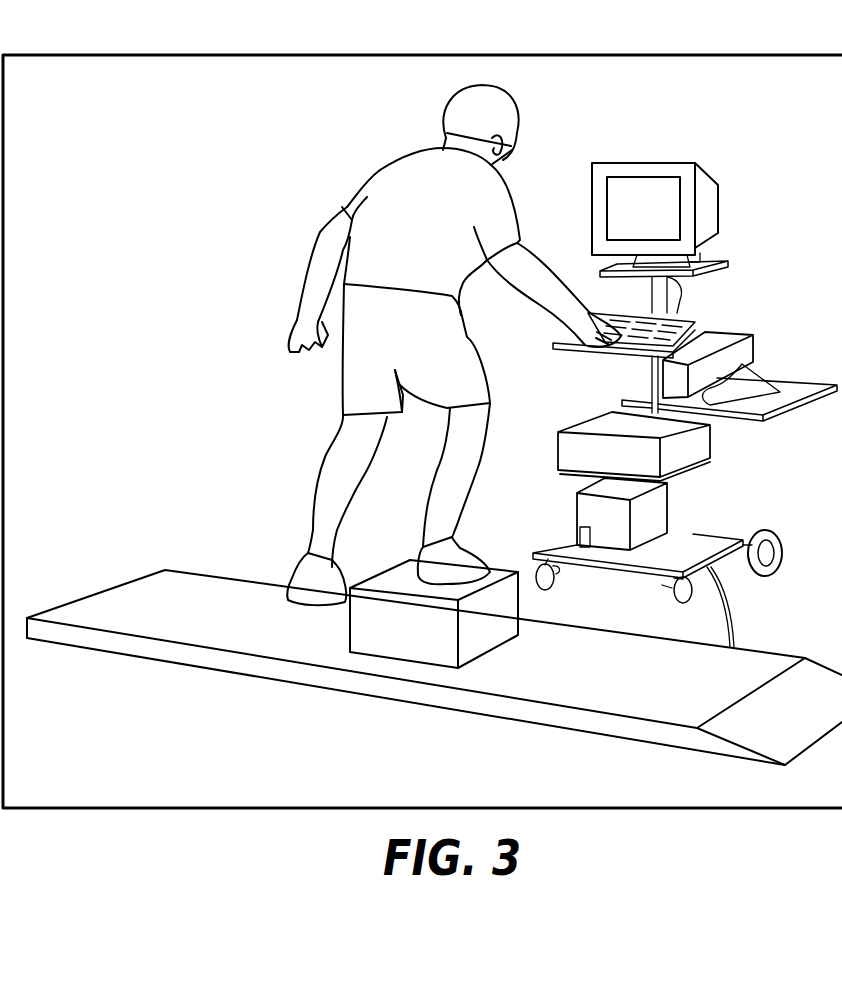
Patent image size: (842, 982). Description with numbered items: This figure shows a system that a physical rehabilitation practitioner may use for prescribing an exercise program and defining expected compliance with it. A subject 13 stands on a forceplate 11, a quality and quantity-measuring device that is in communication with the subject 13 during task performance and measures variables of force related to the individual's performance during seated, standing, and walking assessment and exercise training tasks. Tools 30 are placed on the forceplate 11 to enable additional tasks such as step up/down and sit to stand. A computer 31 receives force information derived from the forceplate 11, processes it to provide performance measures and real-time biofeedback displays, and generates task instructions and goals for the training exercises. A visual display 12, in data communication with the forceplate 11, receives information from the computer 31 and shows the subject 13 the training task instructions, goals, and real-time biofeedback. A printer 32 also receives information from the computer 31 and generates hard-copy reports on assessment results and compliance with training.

The forceplate 11 is at (300, 680).
The visual display 12 is at (708, 190).
The subject 13 is at (384, 172).
The tools 30 is at (437, 635).
The computer 31 is at (693, 445).
The printer 32 is at (743, 350).